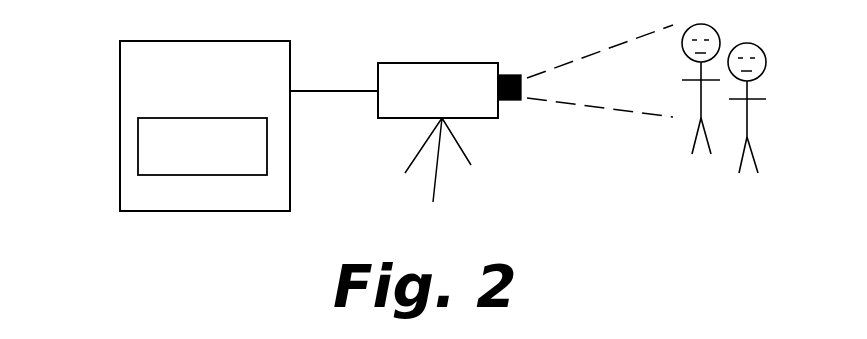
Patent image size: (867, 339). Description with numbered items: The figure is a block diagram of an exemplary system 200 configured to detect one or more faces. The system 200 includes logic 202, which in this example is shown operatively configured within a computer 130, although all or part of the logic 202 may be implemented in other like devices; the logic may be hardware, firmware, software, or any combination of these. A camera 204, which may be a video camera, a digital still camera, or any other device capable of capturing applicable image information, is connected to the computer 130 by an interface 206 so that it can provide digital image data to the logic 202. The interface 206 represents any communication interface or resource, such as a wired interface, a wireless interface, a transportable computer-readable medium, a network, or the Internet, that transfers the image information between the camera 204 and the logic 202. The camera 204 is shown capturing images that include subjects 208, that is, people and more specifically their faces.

The computer 130 is at (183, 211).
The logic 202 is at (155, 175).
The camera 204 is at (417, 63).
The interface 206 is at (345, 91).
The system 200 is at (583, 182).
The subjects 208 is at (711, 191).